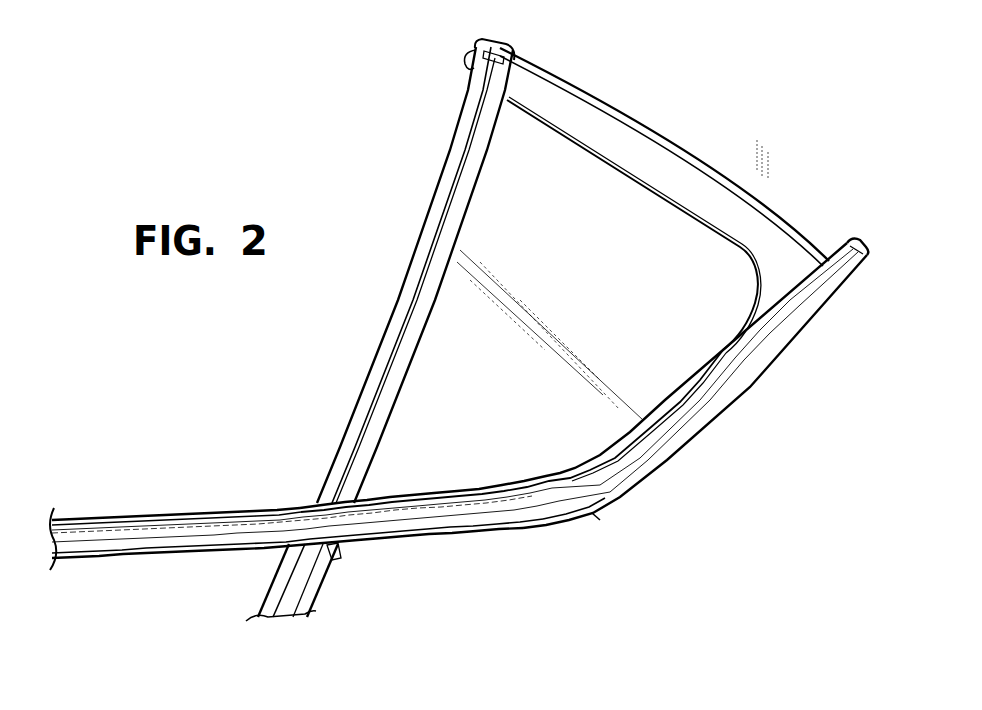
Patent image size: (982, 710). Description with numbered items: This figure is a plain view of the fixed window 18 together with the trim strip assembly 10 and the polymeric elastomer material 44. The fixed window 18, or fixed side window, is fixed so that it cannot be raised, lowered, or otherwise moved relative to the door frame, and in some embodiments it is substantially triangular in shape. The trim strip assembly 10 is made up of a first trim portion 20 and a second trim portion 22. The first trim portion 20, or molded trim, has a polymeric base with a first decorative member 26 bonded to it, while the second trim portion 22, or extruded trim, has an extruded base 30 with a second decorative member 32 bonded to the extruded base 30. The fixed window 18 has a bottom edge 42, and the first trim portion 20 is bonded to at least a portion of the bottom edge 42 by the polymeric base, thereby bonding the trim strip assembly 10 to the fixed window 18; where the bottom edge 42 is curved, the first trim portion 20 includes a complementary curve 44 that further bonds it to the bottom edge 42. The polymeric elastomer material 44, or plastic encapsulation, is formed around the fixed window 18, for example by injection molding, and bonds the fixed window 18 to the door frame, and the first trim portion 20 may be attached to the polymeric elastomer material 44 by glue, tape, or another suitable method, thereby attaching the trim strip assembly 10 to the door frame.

The trim strip assembly 10 is at (113, 566).
The fixed window 18 is at (612, 210).
The first trim portion 20 is at (746, 391).
The second trim portion 22 is at (128, 508).
The first decorative member 26 is at (457, 530).
The extruded base 30 is at (188, 510).
The second decorative member 32 is at (182, 546).
The bottom edge 42 is at (523, 462).
The polymeric elastomer material 44 is at (594, 514).